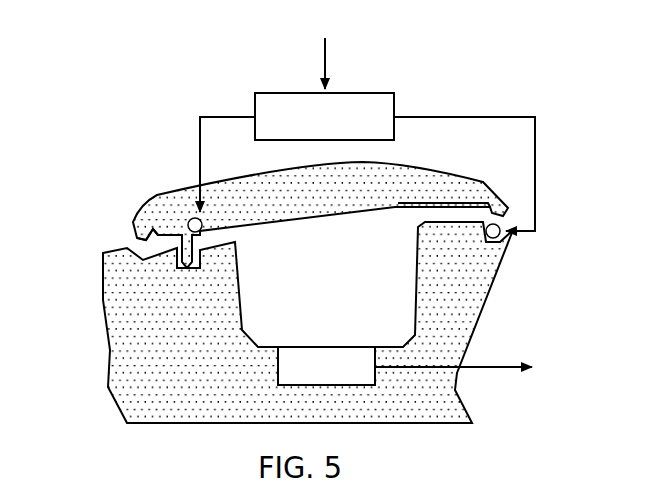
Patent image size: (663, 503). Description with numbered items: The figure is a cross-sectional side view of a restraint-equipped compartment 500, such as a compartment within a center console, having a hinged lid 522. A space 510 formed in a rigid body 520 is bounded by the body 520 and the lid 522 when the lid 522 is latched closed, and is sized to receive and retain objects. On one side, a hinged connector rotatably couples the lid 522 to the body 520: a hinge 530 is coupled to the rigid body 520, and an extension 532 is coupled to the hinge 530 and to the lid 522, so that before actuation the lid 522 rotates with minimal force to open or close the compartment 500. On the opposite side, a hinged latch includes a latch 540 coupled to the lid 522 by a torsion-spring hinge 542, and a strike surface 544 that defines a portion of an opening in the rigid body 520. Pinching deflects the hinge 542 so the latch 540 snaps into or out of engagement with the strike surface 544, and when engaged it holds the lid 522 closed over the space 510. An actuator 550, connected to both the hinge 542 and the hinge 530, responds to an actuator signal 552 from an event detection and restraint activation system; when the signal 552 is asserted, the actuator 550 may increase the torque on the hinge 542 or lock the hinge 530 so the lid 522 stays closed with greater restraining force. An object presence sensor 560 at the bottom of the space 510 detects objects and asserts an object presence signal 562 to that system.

The restraint-equipped compartment 500 is at (118, 106).
The space 510 is at (320, 201).
The rigid body 520 is at (495, 290).
The hinged lid 522 is at (251, 187).
The hinge 530 is at (500, 236).
The extension 532 is at (463, 203).
The latch 540 is at (160, 229).
The hinge 542 is at (189, 218).
The strike surface 544 is at (200, 252).
The actuator 550 is at (376, 93).
The actuator signal 552 is at (329, 68).
The object presence sensor 560 is at (326, 346).
The object presence signal 562 is at (488, 366).